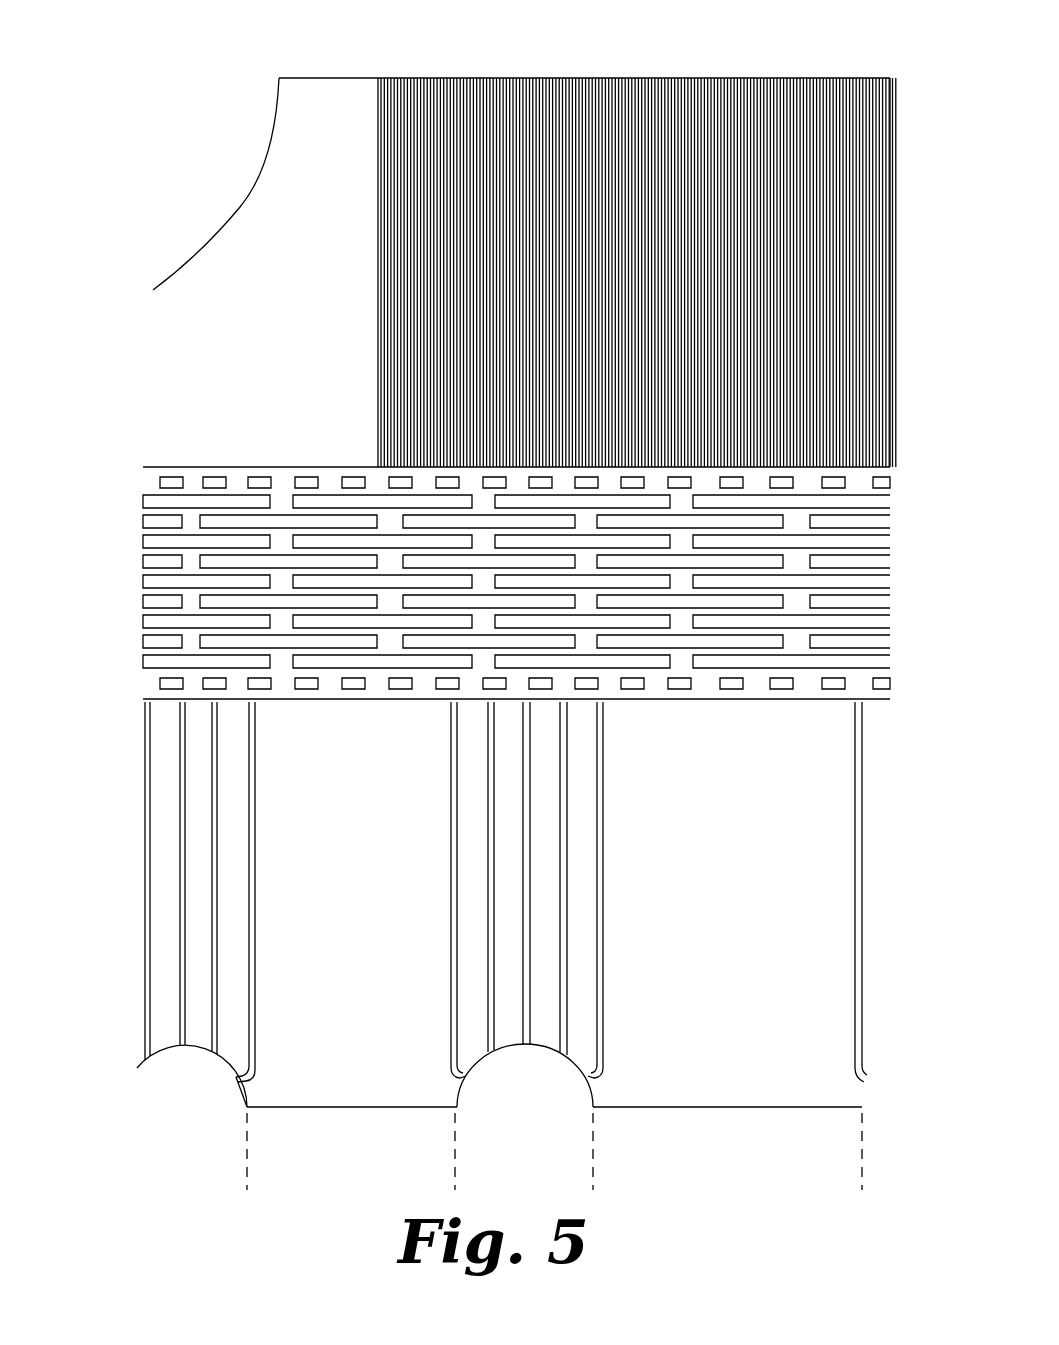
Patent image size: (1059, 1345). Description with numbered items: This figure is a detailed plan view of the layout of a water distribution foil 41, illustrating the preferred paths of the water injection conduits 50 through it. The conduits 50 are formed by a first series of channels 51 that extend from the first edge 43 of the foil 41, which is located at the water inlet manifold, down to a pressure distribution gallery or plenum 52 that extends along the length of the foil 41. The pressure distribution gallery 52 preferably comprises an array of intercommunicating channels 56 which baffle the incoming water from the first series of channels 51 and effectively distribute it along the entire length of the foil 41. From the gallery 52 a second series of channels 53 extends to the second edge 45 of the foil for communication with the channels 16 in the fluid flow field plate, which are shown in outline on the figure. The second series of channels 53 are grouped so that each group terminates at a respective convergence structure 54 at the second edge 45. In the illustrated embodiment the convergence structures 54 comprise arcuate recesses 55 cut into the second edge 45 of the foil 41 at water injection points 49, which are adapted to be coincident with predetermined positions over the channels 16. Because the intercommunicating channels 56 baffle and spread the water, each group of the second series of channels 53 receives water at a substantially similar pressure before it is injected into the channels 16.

The channels 16 is at (541, 1160).
The water distribution foil 41 is at (118, 320).
The first edge 43 is at (535, 77).
The second edge 45 is at (318, 1108).
The water injection points 49 is at (530, 1072).
The water injection conduits 50 is at (302, 468).
The first series of channels 51 is at (379, 234).
The pressure distribution gallery 52 is at (469, 588).
The second series of channels 53 is at (147, 843).
The convergence structures 54 is at (175, 1047).
The arcuate recesses 55 is at (238, 1088).
The intercommunicating channels 56 is at (143, 616).